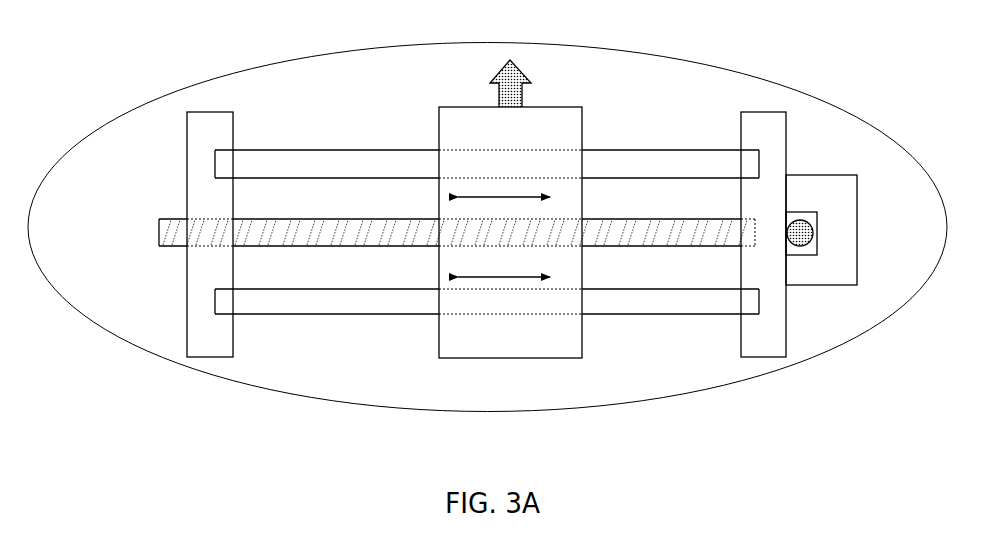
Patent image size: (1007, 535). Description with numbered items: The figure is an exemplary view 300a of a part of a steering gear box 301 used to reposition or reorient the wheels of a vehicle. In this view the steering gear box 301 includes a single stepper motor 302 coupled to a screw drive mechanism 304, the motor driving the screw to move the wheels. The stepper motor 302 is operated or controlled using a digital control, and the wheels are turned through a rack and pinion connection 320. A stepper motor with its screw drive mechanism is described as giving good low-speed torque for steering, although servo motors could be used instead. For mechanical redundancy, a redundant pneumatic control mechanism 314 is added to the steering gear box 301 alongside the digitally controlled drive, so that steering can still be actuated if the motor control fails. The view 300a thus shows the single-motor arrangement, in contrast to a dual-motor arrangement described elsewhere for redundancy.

The view 300a is at (830, 74).
The steering gear box 301 is at (220, 78).
The stepper motor 302 is at (818, 225).
The screw drive mechanism 304 is at (220, 247).
The redundant pneumatic control mechanism 314 is at (170, 248).
The rack and pinion connection 320 is at (499, 98).